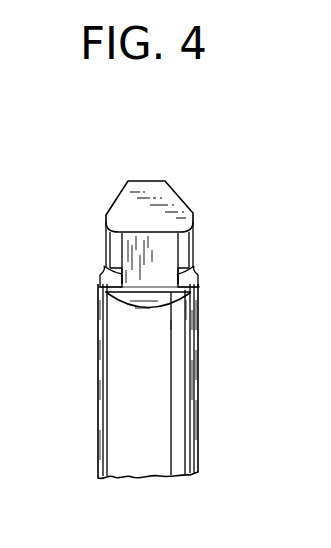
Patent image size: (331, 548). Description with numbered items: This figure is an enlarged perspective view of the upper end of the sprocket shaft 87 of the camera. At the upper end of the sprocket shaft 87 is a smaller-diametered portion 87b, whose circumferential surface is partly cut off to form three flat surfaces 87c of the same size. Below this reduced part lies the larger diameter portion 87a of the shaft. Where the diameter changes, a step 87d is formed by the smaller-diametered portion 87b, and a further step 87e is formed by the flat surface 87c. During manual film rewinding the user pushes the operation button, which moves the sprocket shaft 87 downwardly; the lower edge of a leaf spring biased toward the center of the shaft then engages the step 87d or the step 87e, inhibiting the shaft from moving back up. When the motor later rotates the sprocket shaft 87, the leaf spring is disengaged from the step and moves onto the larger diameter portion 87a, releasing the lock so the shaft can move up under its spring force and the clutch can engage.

The sprocket shaft 87 is at (148, 298).
The larger diameter portion 87a is at (110, 369).
The smaller-diametered portion 87b is at (150, 180).
The flat surfaces 87c is at (120, 200).
The step 87d is at (103, 269).
The step 87e is at (145, 300).